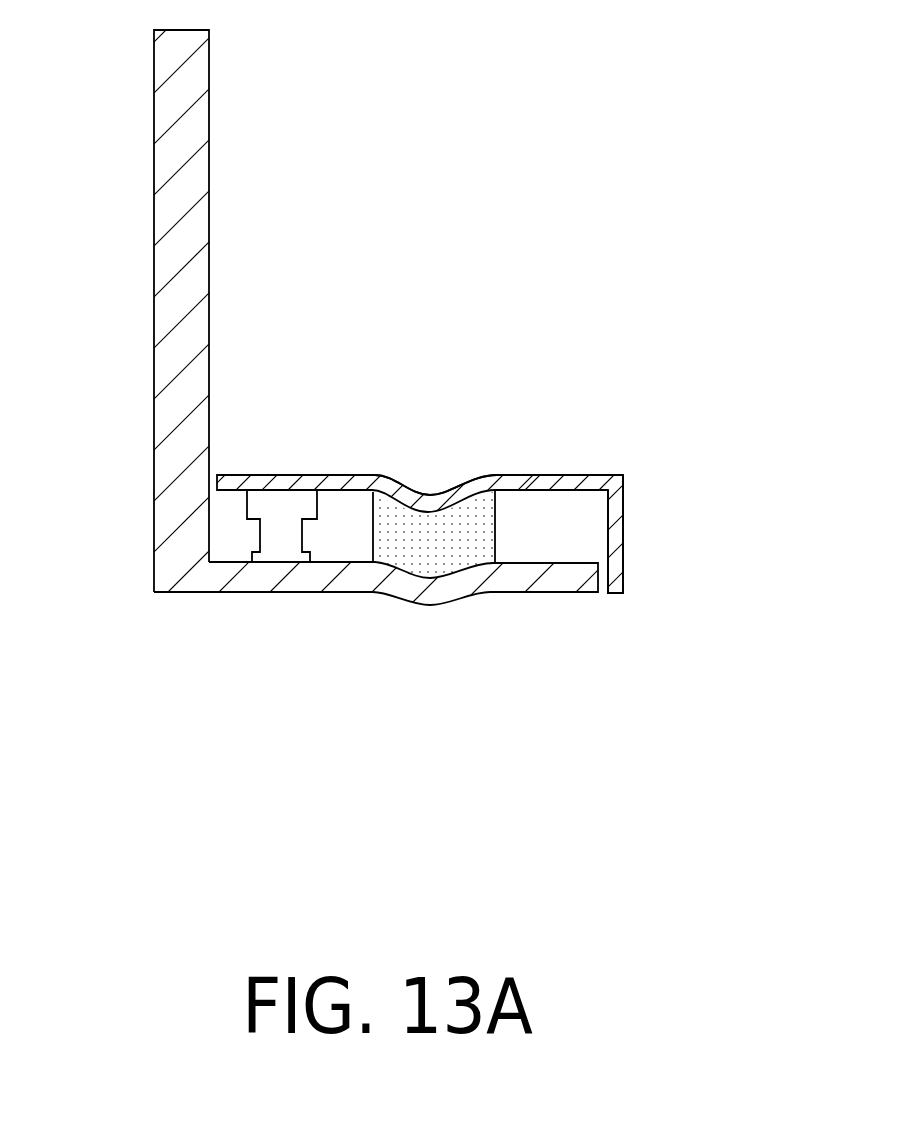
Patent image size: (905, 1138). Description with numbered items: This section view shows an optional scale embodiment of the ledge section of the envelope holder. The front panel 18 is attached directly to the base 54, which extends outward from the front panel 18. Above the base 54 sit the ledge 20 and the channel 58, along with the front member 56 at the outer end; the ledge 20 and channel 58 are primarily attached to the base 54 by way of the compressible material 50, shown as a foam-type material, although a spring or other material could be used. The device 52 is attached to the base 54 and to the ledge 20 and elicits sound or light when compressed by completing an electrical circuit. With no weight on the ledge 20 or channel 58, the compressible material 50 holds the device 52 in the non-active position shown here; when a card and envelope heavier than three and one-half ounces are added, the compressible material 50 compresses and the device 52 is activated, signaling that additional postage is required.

The front panel 18 is at (178, 402).
The ledge 20 is at (565, 475).
The compressible material 50 is at (430, 543).
The device 52 is at (282, 540).
The base 54 is at (523, 592).
The front member 56 is at (623, 528).
The channel 58 is at (428, 493).